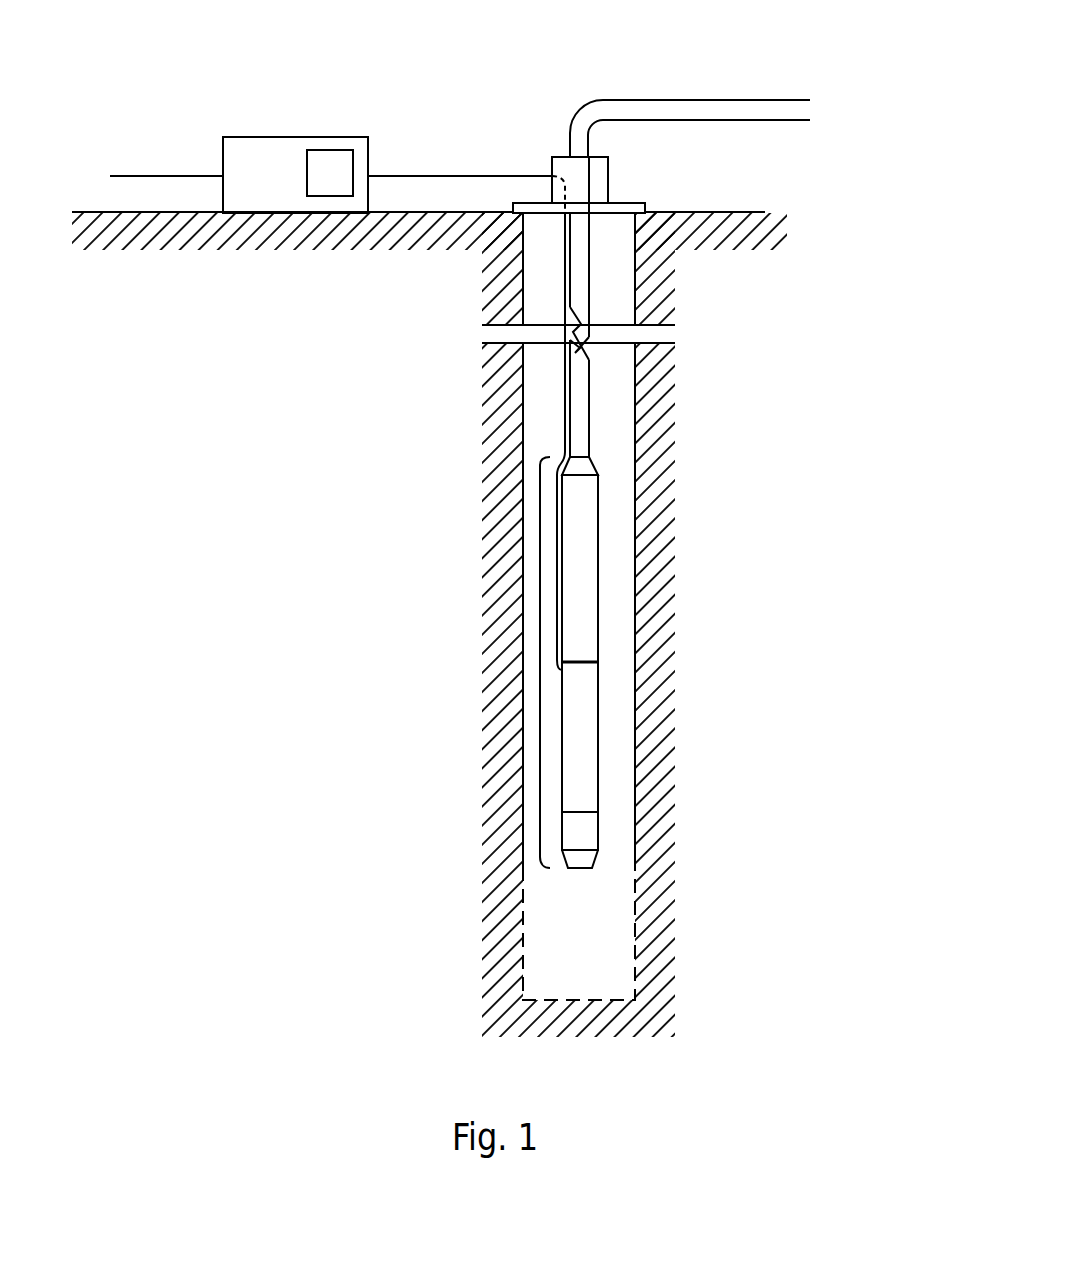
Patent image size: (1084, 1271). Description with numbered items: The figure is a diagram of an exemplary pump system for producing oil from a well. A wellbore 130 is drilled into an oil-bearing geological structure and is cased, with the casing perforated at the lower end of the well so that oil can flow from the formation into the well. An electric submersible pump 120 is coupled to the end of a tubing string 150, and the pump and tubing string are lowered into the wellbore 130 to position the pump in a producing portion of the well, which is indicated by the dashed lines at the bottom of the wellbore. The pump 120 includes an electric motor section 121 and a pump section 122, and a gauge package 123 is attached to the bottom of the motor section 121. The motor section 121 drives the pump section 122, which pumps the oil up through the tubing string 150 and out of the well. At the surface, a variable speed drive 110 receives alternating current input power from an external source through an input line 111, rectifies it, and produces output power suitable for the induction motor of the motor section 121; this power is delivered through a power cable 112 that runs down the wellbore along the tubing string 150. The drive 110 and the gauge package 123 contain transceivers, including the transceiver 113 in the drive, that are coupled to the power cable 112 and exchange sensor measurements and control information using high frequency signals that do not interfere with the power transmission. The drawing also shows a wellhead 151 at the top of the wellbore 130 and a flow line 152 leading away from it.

The variable speed drive 110 is at (297, 137).
The input line 111 is at (157, 176).
The power cable 112 is at (457, 176).
The transceiver 113 is at (347, 150).
The electric submersible pump 120 is at (578, 649).
The electric motor section 121 is at (598, 789).
The pump section 122 is at (598, 493).
The gauge package 123 is at (598, 838).
The wellbore 130 is at (637, 584).
The tubing string 150 is at (610, 392).
The wellhead 151 is at (608, 173).
The flow line 152 is at (700, 100).